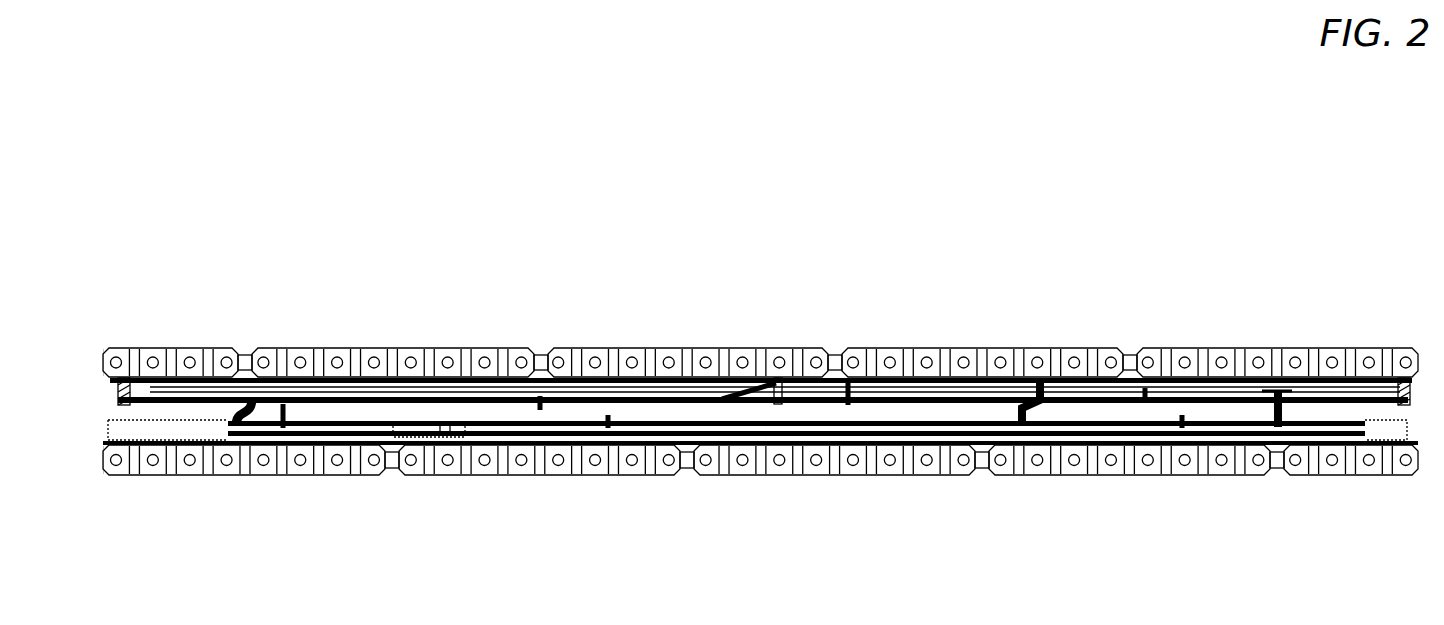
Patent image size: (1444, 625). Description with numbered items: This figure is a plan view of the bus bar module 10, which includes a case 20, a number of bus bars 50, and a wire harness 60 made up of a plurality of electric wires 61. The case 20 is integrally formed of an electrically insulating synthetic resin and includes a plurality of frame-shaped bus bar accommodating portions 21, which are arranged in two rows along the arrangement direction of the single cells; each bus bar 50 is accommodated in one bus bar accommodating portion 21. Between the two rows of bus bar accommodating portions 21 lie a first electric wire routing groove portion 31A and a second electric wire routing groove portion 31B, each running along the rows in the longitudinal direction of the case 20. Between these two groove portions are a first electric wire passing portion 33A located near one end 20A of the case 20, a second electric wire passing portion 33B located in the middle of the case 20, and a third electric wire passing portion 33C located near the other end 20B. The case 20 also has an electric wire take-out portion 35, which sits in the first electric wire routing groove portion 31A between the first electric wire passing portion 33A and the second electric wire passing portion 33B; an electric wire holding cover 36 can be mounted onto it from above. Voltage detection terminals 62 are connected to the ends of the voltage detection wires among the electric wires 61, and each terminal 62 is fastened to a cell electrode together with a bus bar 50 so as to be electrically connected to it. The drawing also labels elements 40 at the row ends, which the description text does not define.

The bus bar module 10 is at (907, 268).
The case 20 is at (921, 343).
The one end of the case 20A is at (118, 412).
The other end of the case 20B is at (1410, 415).
The bus bar accommodating portion 21 is at (212, 347).
The first electric wire routing groove portion 31A is at (705, 450).
The second electric wire routing groove portion 31B is at (657, 392).
The first electric wire passing portion 33A is at (200, 395).
The second electric wire passing portion 33B is at (1030, 405).
The third electric wire passing portion 33C is at (1270, 396).
The electric wire take-out portion 35 is at (450, 441).
The electric wire holding cover 36 is at (450, 427).
The coupling bus bar 40 is at (122, 347).
The bus bar 50 is at (228, 350).
The wire harness 60 is at (932, 411).
The electric wire 61 is at (706, 393).
The voltage detection terminal 62 is at (152, 347).